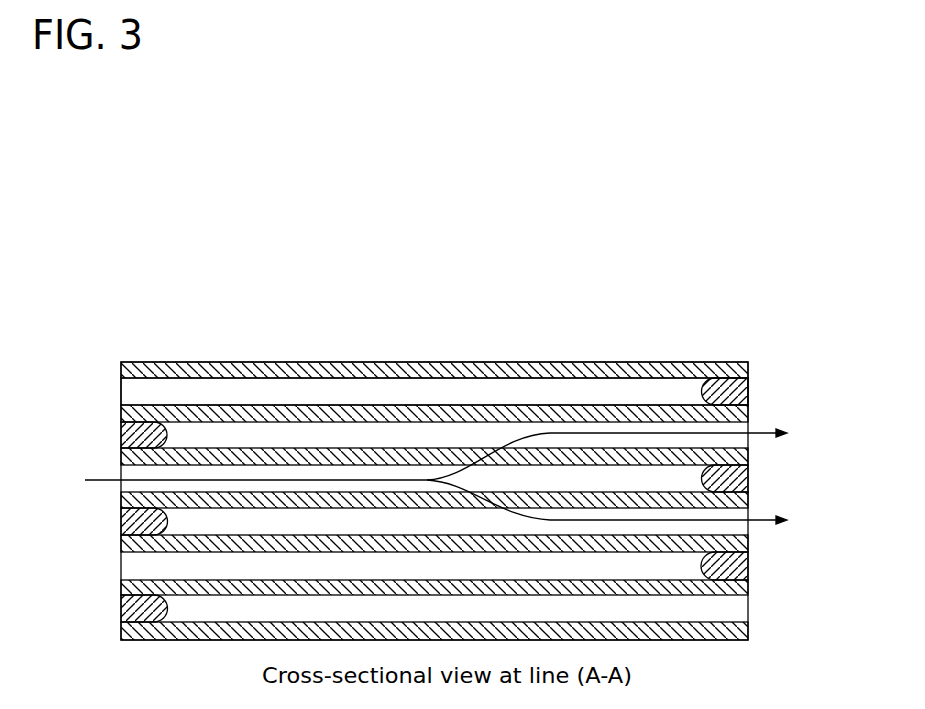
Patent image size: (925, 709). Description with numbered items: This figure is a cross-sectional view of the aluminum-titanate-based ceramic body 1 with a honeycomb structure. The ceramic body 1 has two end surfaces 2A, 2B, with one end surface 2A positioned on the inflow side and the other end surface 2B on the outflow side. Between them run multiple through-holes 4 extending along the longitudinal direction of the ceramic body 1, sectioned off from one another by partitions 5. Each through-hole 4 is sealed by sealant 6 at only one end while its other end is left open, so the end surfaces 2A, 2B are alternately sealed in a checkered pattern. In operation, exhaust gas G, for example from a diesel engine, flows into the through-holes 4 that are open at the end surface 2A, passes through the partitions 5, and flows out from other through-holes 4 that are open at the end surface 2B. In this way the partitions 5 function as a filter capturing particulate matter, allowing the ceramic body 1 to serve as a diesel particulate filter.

The ceramic body 1 is at (192, 326).
The through-holes 4 is at (130, 397).
The partitions 5 is at (302, 406).
The sealant 6 is at (748, 392).
The exhaust gas G is at (426, 476).
The end surface 2A is at (121, 604).
The end surface 2B is at (748, 565).